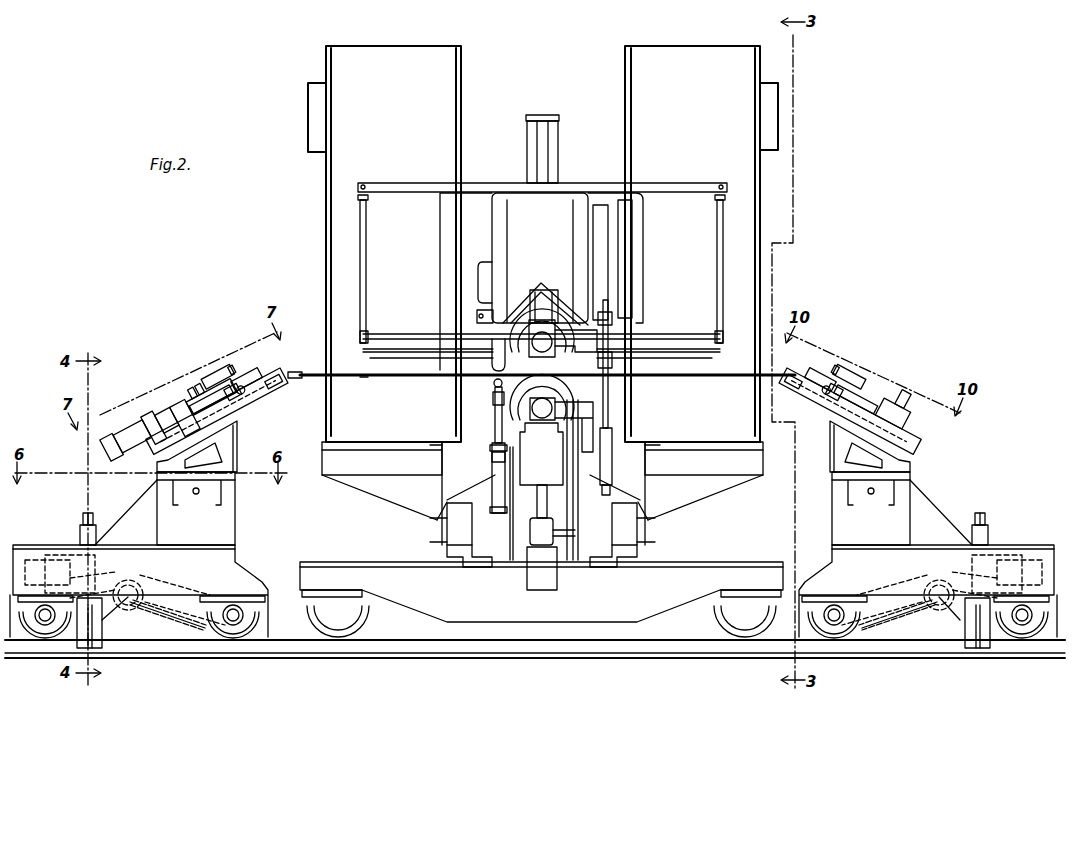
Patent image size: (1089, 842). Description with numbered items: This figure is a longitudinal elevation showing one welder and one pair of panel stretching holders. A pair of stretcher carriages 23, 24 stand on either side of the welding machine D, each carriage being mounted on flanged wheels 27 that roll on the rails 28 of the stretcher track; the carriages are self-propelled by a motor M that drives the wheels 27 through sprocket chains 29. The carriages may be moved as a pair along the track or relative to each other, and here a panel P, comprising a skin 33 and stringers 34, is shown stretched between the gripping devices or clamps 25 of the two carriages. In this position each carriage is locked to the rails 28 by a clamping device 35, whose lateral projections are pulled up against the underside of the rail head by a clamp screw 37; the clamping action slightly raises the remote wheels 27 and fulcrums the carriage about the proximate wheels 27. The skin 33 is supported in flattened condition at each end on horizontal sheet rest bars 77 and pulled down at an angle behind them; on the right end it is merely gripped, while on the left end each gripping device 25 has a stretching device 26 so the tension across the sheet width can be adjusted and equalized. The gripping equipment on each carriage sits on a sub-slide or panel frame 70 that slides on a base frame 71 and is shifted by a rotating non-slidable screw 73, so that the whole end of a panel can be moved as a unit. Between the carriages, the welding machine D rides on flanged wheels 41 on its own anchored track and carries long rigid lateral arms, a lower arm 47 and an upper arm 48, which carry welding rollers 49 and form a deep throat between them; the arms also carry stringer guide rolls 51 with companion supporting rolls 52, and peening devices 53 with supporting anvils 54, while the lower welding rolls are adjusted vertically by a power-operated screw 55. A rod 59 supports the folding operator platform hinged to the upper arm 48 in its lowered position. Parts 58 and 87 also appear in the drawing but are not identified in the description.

The welding machine D is at (762, 197).
The motor M is at (80, 548).
The panel P is at (366, 380).
The stretcher carriage 23 is at (240, 519).
The stretcher carriage 24 is at (830, 507).
The gripping device 25 is at (268, 380).
The stretching device 26 is at (134, 432).
The flanged wheel 27 is at (40, 640).
The rail 28 is at (165, 650).
The sprocket chain 29 is at (125, 640).
The skin 33 is at (300, 372).
The stringer 34 is at (340, 372).
The clamping device 35 is at (105, 648).
The clamp screw 37 is at (93, 515).
The flanged wheel 41 is at (372, 622).
The lower lateral arm 47 is at (492, 470).
The upper lateral arm 48 is at (557, 205).
The welding roller 49 is at (565, 358).
The stringer guide roll 51 is at (492, 379).
The supporting roll 52 is at (493, 389).
The peening device 53 is at (632, 343).
The supporting anvil 54 is at (611, 385).
The power-operated screw 55 is at (530, 568).
The lower cross bar 58 is at (392, 337).
The rod 59 is at (366, 273).
The sub-slide 70 is at (239, 450).
The base frame 71 is at (237, 498).
The screw 73 is at (196, 495).
The sheet rest bar 77 is at (290, 388).
The clamp screw 87 is at (210, 368).